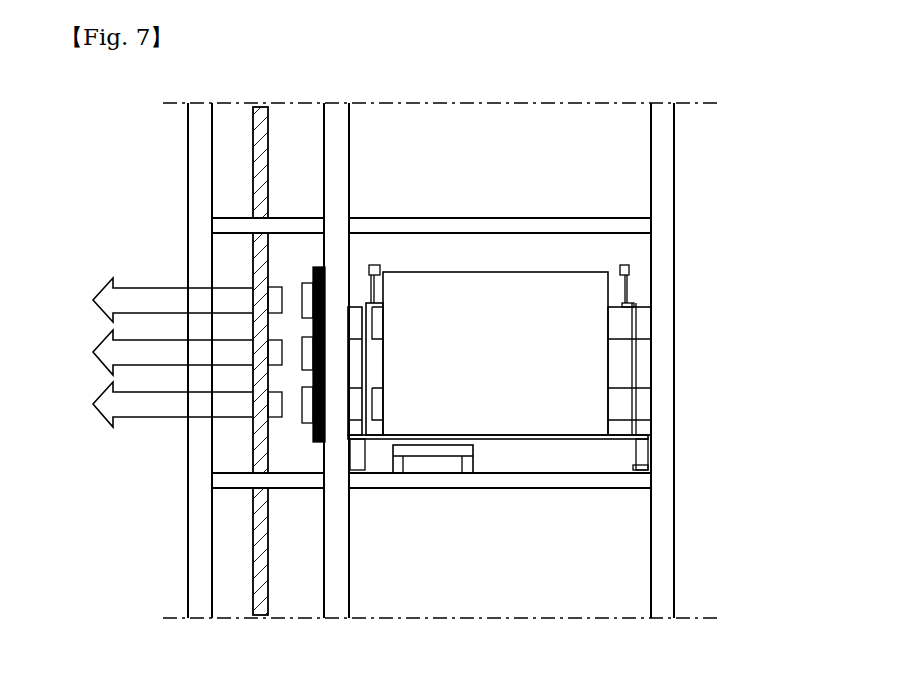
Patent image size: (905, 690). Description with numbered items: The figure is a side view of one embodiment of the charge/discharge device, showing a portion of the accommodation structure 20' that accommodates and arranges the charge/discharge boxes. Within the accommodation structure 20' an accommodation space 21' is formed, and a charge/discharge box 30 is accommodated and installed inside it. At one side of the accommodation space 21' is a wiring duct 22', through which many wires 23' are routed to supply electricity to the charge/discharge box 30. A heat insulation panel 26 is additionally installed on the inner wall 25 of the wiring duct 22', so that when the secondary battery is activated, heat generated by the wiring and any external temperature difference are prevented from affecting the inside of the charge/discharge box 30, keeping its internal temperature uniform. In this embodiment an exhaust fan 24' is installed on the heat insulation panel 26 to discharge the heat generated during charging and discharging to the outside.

The accommodation structure 20' is at (475, 360).
The accommodation space 21' is at (474, 353).
The wiring duct 22' is at (164, 360).
The wires 23' is at (206, 363).
The exhaust fan 24' is at (291, 484).
The inner wall 25 is at (334, 181).
The heat insulation panel 26 is at (312, 273).
The charge/discharge box 30 is at (583, 346).